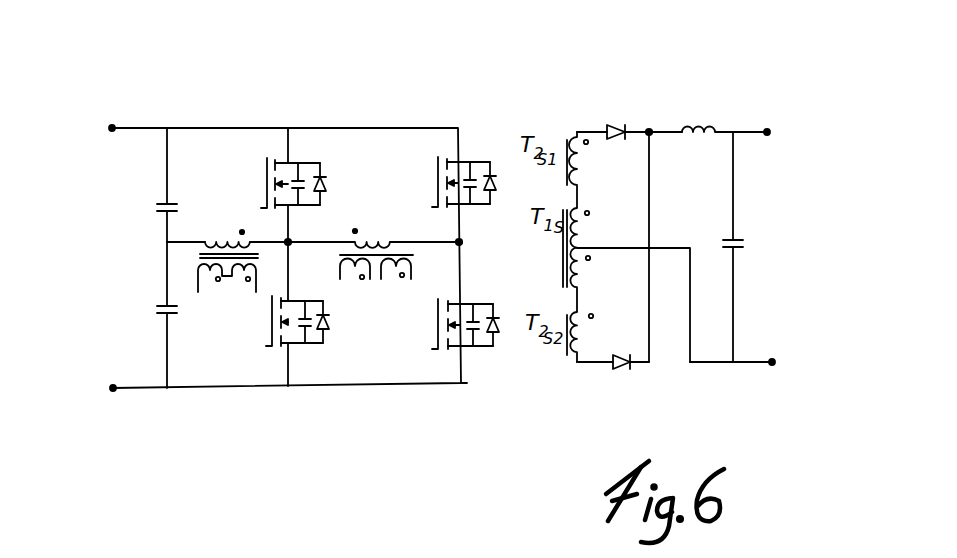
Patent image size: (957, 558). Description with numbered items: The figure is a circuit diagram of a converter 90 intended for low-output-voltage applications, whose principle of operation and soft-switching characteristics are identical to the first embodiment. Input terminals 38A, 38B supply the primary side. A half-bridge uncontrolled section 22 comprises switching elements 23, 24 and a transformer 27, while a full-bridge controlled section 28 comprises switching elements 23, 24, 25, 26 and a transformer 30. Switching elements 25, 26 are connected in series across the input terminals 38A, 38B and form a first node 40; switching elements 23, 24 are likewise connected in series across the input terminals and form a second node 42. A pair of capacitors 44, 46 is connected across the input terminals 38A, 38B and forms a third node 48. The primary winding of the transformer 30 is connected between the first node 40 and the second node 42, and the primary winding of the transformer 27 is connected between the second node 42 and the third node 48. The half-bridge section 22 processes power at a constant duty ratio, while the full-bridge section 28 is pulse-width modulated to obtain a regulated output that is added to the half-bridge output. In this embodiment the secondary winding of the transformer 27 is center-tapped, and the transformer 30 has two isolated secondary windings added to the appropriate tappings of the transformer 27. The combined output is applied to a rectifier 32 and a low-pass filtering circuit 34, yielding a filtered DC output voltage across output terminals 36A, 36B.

The converter 90 is at (146, 76).
The half-bridge uncontrolled section 22 is at (287, 98).
The full-bridge controlled section 28 is at (460, 69).
The input terminal 38A is at (112, 128).
The input terminal 38B is at (113, 388).
The capacitor 44 is at (167, 206).
The capacitor 46 is at (167, 335).
The third node 48 is at (167, 242).
The transformer 27 is at (196, 242).
The transformer 30 is at (410, 242).
The switching element 23 is at (294, 163).
The switching element 24 is at (310, 343).
The switching element 25 is at (464, 162).
The switching element 26 is at (464, 304).
The second node 42 is at (288, 242).
The first node 40 is at (459, 242).
The rectifier 32 is at (638, 93).
The filtering circuit 34 is at (726, 110).
The output terminal 36A is at (767, 132).
The output terminal 36B is at (772, 362).